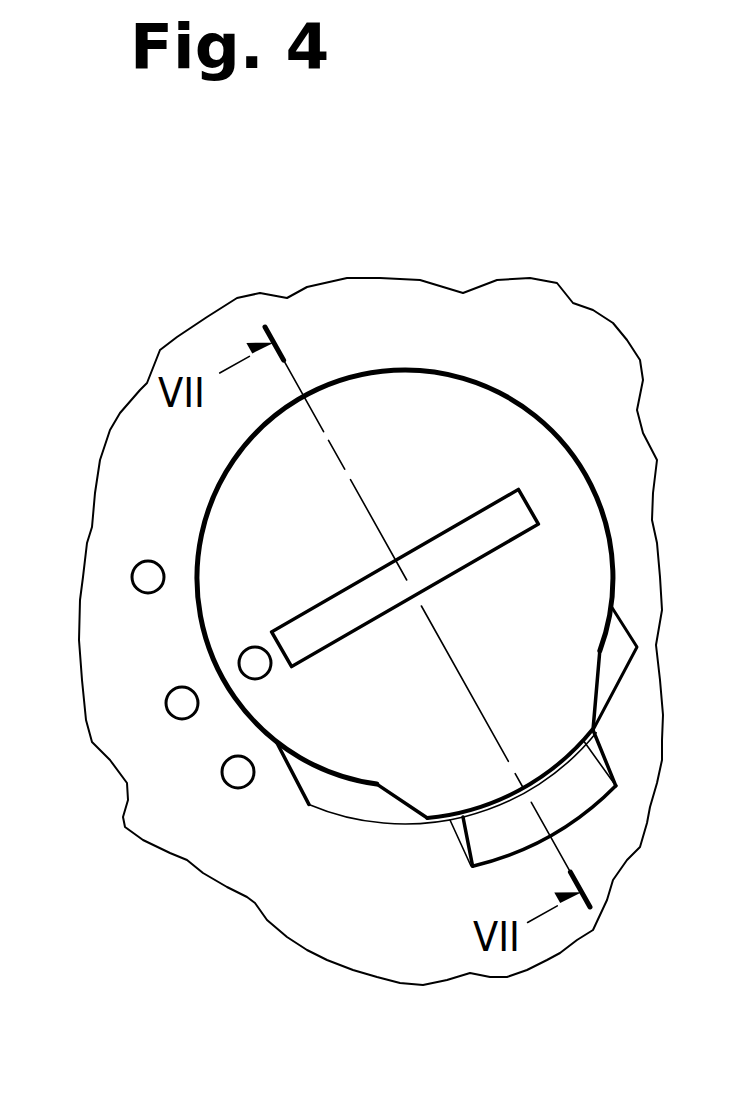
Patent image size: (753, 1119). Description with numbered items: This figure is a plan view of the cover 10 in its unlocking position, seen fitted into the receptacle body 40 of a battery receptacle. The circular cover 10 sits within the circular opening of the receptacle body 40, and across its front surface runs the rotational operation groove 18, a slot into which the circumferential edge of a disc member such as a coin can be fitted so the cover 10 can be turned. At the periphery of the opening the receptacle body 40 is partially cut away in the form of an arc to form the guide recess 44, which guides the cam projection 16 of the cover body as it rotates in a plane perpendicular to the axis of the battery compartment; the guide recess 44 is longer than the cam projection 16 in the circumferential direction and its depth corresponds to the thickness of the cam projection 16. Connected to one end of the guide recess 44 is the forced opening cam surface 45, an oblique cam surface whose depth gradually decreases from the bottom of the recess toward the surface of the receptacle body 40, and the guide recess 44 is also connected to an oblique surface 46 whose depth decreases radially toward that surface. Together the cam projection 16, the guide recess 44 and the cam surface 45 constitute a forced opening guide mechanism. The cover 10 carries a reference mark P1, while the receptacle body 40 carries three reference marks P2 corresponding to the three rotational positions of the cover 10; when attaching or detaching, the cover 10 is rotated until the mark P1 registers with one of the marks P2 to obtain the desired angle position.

The cover 10 is at (557, 396).
The cam projection 16 is at (547, 748).
The rotational operation groove 18 is at (436, 548).
The receptacle body 40 is at (120, 452).
The guide recess 44 is at (340, 800).
The forced opening cam surface 45 is at (615, 662).
The oblique surface 46 is at (502, 838).
The reference mark P1 is at (247, 621).
The reference marks P2 is at (233, 780).